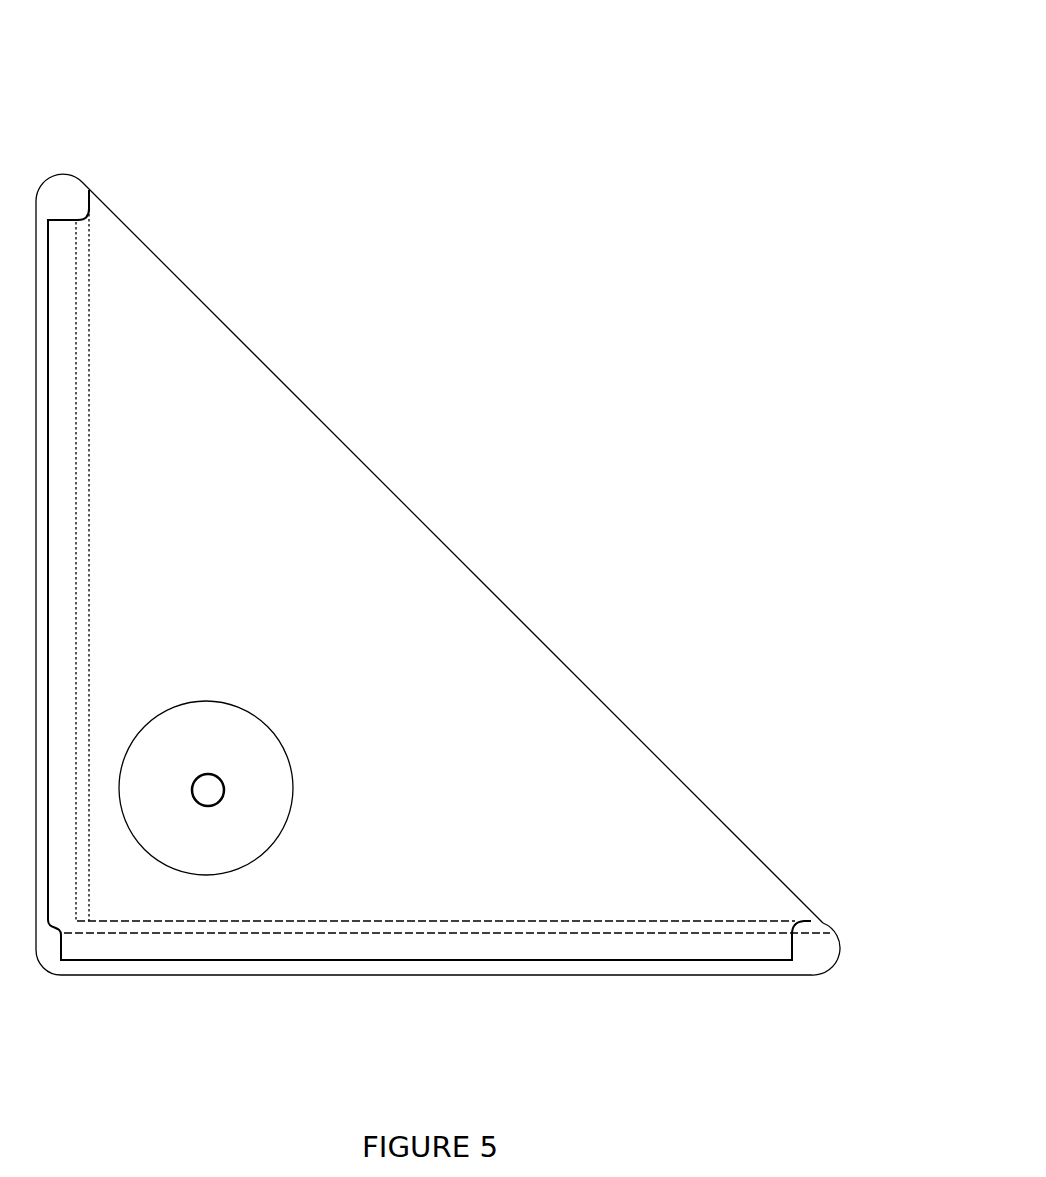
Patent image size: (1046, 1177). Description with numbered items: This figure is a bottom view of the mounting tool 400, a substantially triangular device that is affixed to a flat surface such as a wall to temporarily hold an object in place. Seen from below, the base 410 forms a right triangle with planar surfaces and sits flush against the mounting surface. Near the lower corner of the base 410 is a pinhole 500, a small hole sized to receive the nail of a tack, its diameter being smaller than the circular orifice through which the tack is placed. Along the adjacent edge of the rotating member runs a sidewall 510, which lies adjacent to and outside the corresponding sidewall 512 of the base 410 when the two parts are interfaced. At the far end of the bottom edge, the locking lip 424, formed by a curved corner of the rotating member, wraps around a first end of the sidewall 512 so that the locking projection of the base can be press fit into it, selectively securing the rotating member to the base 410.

The mounting tool 400 is at (49, 81).
The base 410 is at (184, 417).
The locking lip 424 is at (818, 937).
The pinhole 500 is at (209, 793).
The sidewall 510 is at (568, 975).
The sidewall 512 is at (443, 960).